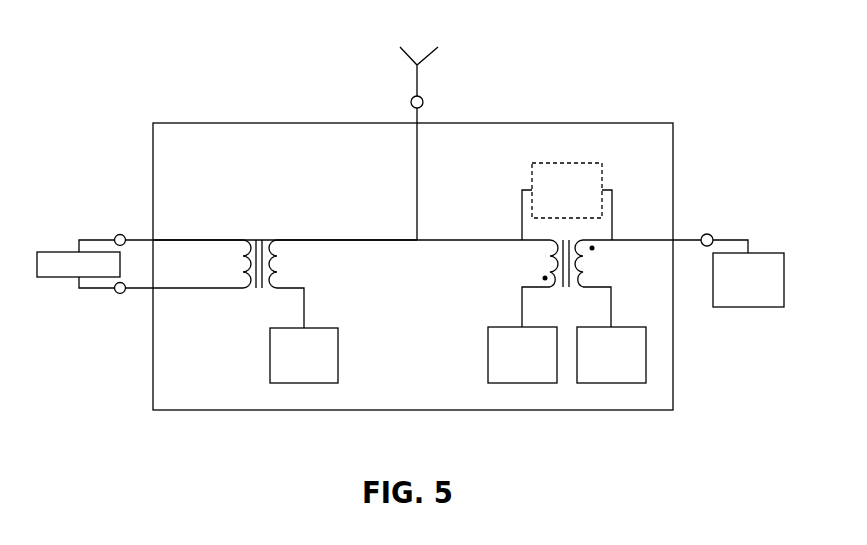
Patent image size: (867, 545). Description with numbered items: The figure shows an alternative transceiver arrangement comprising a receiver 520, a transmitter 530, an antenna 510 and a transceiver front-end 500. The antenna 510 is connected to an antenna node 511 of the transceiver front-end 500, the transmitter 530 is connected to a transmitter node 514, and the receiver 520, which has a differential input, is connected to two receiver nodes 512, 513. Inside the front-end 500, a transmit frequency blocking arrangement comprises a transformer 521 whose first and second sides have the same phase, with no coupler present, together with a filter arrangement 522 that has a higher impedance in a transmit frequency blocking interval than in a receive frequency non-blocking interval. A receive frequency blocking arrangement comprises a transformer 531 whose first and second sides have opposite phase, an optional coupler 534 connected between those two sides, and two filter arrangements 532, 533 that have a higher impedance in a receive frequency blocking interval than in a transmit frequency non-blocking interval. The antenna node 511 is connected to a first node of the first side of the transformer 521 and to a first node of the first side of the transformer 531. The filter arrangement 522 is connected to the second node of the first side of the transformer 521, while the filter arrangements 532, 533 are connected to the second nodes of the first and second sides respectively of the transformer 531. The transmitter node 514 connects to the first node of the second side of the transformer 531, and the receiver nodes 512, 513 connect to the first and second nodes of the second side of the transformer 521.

The transceiver front-end 500 is at (590, 122).
The antenna 510 is at (401, 52).
The antenna node 511 is at (424, 101).
The receiver node 512 is at (115, 236).
The receiver node 513 is at (115, 292).
The transmitter node 514 is at (712, 234).
The receiver 520 is at (78, 264).
The transformer 521 is at (279, 262).
The filter arrangement 522 is at (304, 355).
The transmitter 530 is at (748, 273).
The transformer 531 is at (548, 263).
The filter arrangement 532 is at (522, 355).
The filter arrangement 533 is at (611, 355).
The coupler 534 is at (567, 201).